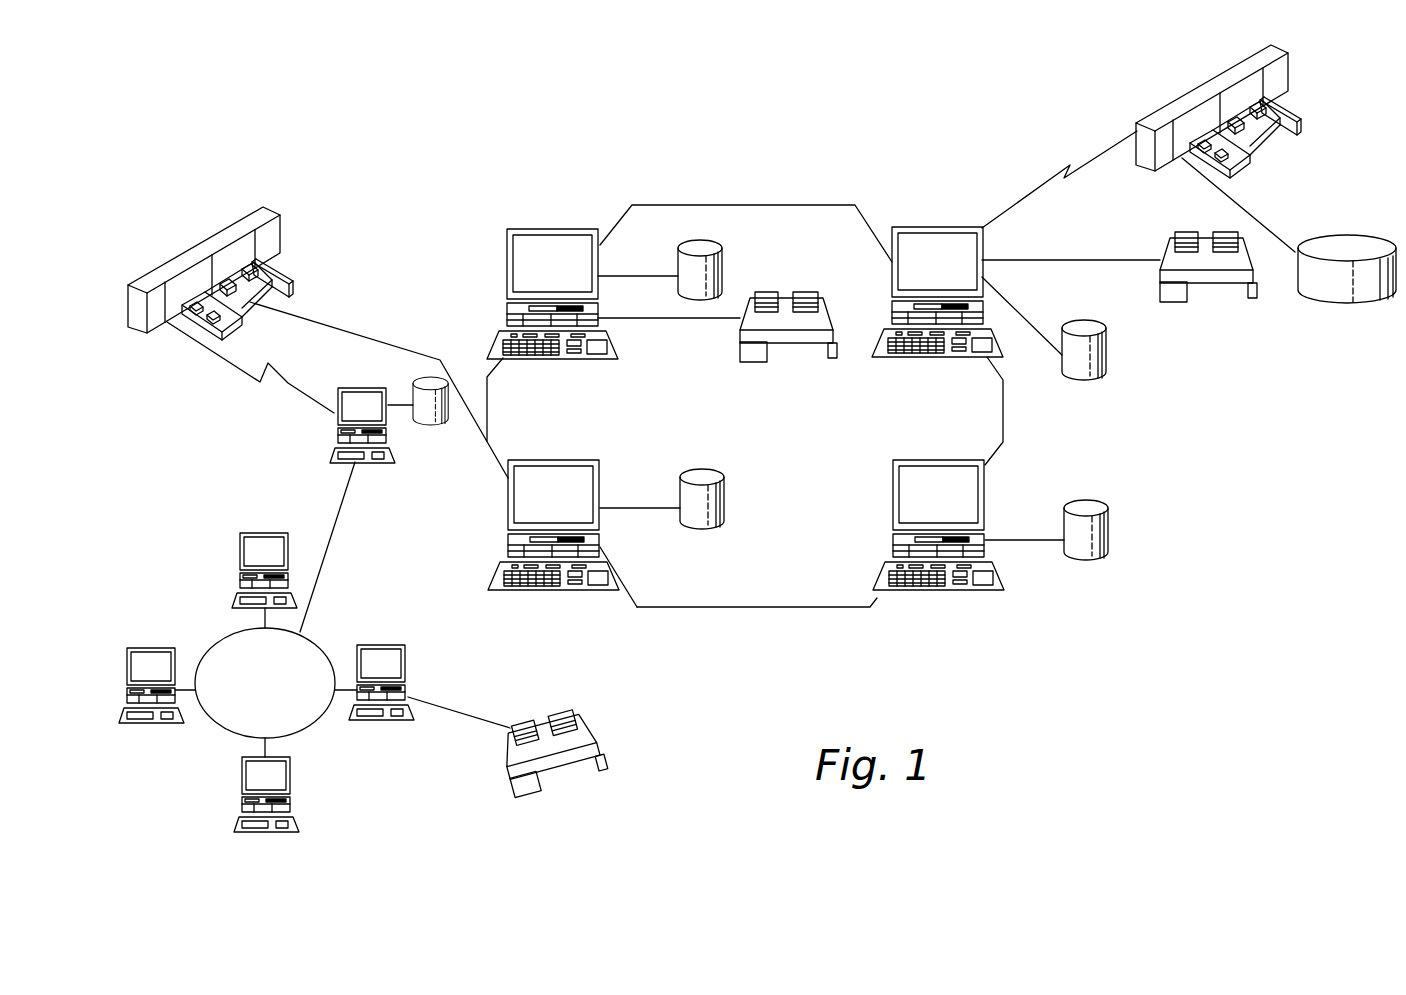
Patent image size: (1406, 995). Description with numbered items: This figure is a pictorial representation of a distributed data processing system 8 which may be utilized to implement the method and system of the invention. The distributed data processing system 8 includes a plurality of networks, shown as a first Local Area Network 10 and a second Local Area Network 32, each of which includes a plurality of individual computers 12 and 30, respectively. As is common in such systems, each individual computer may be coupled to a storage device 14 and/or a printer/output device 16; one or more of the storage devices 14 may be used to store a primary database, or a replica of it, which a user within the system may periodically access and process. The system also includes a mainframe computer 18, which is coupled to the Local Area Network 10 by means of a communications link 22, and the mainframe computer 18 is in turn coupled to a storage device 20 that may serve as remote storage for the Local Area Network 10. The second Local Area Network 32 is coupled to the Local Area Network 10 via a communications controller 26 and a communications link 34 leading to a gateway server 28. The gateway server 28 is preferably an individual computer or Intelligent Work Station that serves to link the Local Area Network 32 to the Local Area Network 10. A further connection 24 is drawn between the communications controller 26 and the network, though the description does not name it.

The distributed data processing system 8 is at (775, 150).
The Local Area Network 10 is at (773, 608).
The individual computer 12 is at (570, 229).
The storage device 14 is at (722, 246).
The printer/output device 16 is at (785, 292).
The mainframe computer 18 is at (1212, 80).
The storage device 20 is at (1367, 240).
The communications link 22 is at (1096, 148).
The communications link 24 is at (367, 332).
The communications controller 26 is at (272, 213).
The gateway server 28 is at (360, 388).
The individual computer 30 is at (273, 533).
The Local Area Network 32 is at (220, 728).
The communications link 34 is at (290, 385).